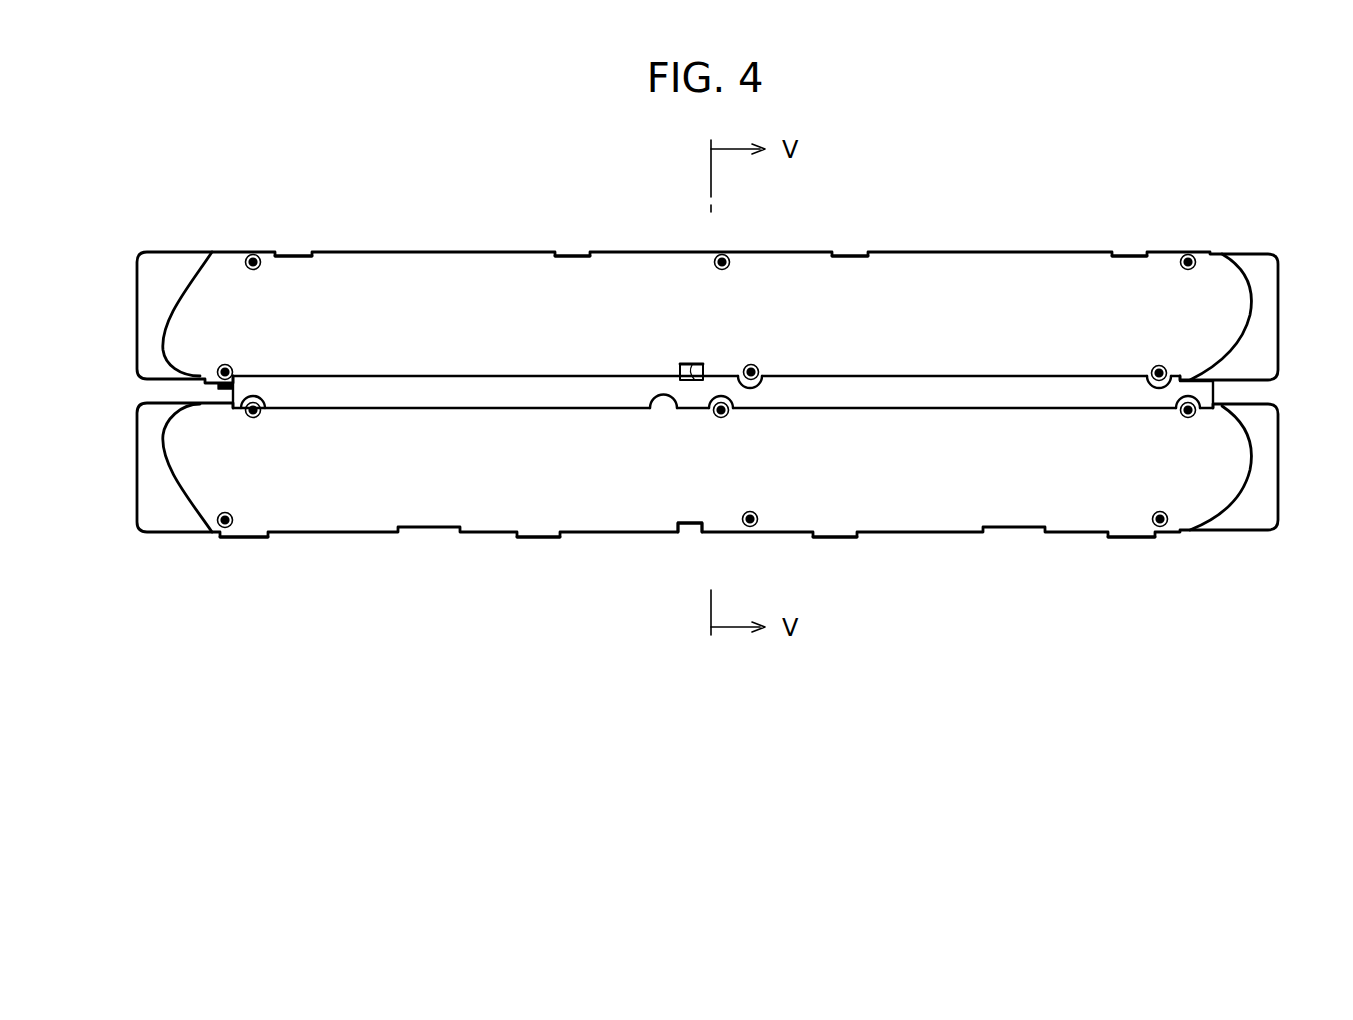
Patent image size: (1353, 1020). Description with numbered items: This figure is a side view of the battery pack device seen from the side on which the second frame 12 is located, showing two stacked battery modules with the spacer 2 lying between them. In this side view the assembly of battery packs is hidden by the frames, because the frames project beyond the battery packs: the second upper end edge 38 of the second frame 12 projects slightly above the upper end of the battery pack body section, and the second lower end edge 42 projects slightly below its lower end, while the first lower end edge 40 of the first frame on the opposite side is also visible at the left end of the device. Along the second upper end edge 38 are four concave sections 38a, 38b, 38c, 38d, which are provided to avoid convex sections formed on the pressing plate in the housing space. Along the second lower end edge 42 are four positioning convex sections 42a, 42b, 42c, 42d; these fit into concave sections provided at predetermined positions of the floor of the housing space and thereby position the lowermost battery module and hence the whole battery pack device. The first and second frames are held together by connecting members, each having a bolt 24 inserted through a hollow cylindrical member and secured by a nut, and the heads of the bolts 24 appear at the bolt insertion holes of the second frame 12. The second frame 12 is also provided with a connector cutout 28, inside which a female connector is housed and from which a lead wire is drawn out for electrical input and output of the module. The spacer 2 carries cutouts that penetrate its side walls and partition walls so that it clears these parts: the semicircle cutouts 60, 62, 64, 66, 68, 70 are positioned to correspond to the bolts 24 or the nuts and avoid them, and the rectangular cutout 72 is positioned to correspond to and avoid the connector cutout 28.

The spacer 2 is at (1018, 392).
The second frame 12 is at (1223, 265).
The bolt 24 is at (247, 268).
The connector cutout 28 is at (696, 363).
The second upper end edge 38 is at (965, 250).
The concave section 38a is at (1130, 250).
The concave section 38b is at (856, 250).
The concave section 38c is at (575, 250).
The concave section 38d is at (297, 250).
The first lower end edge 40 is at (230, 386).
The second lower end edge 42 is at (962, 534).
The positioning convex section 42a is at (1130, 538).
The positioning convex section 42b is at (836, 538).
The positioning convex section 42c is at (540, 538).
The positioning convex section 42d is at (243, 538).
The semicircle cutout 60 is at (1181, 419).
The semicircle cutout 62 is at (1152, 365).
The semicircle cutout 64 is at (758, 365).
The semicircle cutout 66 is at (714, 418).
The semicircle cutout 68 is at (660, 402).
The semicircle cutout 70 is at (259, 418).
The rectangular cutout 72 is at (681, 368).